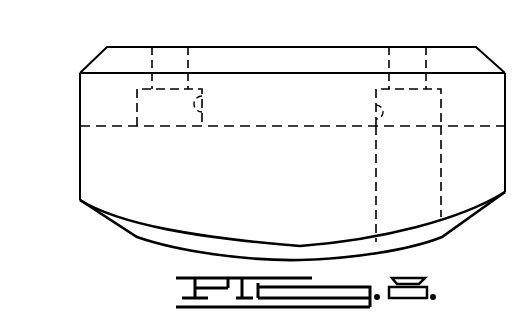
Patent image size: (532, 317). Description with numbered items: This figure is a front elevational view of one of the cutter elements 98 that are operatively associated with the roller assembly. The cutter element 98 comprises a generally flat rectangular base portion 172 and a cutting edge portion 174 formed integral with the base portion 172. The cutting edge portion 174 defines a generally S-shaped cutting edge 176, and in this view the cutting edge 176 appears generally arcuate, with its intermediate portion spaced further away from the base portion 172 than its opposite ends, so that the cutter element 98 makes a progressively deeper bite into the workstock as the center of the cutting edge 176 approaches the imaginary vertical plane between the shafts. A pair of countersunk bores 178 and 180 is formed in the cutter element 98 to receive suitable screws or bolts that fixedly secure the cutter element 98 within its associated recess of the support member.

The base portion 172 is at (97, 82).
The cutter element 98 is at (79, 108).
The countersunk bore 178 is at (207, 108).
The countersunk bore 180 is at (372, 113).
The cutting edge portion 174 is at (127, 188).
The cutting edge 176 is at (197, 243).